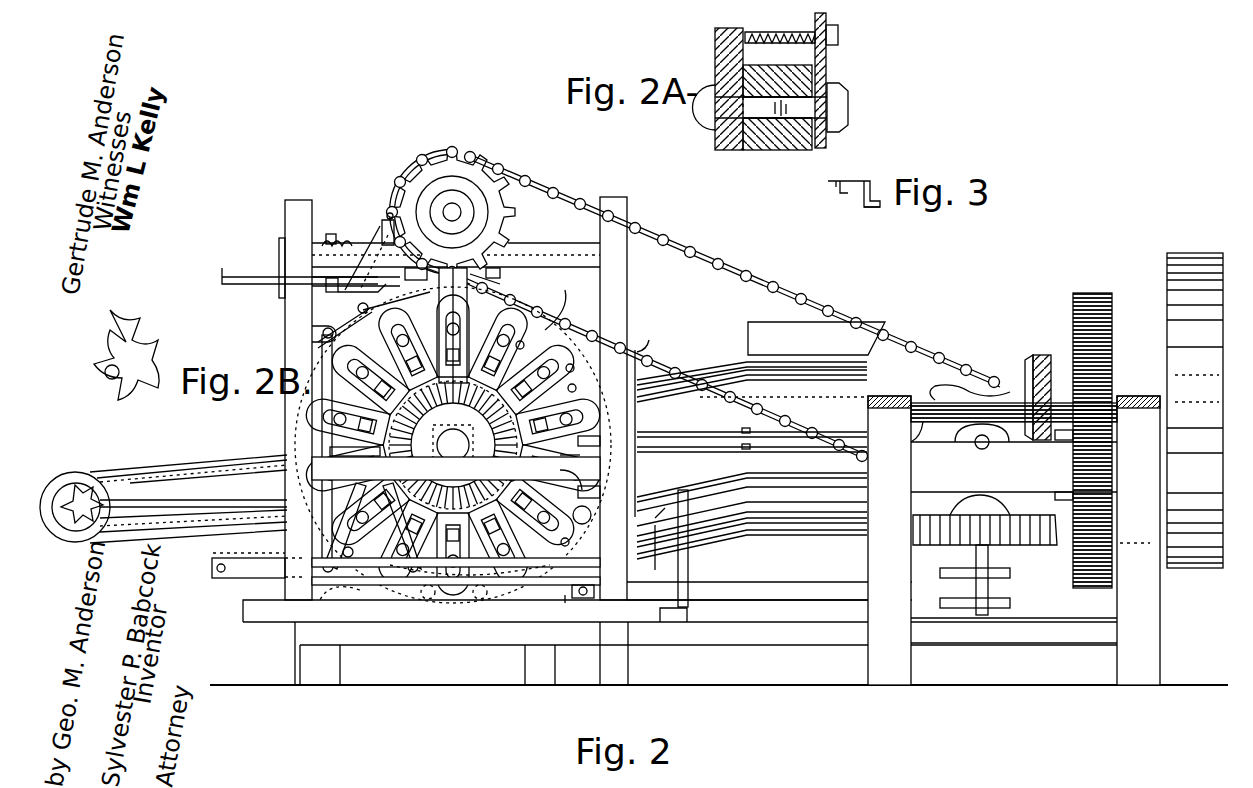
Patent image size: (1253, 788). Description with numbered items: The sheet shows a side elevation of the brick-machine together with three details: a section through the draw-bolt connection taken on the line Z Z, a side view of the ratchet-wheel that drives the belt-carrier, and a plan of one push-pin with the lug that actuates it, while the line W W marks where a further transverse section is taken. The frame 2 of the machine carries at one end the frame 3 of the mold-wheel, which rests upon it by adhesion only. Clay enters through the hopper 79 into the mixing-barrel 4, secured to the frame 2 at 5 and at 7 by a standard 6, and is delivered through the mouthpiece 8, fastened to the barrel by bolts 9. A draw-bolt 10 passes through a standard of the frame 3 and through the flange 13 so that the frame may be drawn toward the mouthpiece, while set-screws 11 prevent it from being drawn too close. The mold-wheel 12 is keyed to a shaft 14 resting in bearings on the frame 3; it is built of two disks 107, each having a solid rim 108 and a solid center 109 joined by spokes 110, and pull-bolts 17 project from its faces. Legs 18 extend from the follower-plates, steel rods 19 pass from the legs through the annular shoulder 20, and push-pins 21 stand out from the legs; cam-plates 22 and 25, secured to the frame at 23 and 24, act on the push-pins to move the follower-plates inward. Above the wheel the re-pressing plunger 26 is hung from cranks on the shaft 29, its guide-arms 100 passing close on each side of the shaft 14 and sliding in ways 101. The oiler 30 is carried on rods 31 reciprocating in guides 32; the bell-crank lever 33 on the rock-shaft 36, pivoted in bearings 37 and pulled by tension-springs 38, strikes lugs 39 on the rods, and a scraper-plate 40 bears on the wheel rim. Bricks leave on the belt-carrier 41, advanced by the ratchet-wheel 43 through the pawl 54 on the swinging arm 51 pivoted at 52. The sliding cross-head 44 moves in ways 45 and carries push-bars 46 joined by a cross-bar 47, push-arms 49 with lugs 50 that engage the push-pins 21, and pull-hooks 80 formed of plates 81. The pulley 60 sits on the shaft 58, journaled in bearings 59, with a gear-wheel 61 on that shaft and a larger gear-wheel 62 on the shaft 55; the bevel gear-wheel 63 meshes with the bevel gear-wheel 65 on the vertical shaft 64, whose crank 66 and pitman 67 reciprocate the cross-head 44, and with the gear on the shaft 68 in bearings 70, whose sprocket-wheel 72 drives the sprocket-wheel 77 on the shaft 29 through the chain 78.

In FIG. 2, the frame of the machine 2 is at (1010, 549).
In FIG. 2, the frame of the mold-wheel 3 is at (719, 441).
In FIG. 2A, the frame of the mold-wheel 3 is at (760, 150).
In FIG. 2, the mixing-barrel 4 is at (752, 460).
In FIG. 2, the securing point of mixing-barrel 5 is at (920, 443).
In FIG. 2, the standard 6 is at (688, 555).
In FIG. 2, the securing point of mixing-barrel 7 is at (687, 612).
In FIG. 2, the mouthpiece 8 is at (636, 428).
In FIG. 2A, the mouthpiece 8 is at (826, 65).
In FIG. 2, the bolts 9 is at (649, 437).
In FIG. 2, the draw-bolt 10 is at (571, 523).
In FIG. 2A, the draw-bolt 10 is at (848, 108).
In FIG. 2A, the set-screw 11 is at (838, 35).
In FIG. 2, the mold-wheel 12 is at (533, 307).
In FIG. 2, the flange 13 is at (574, 549).
In FIG. 2A, the flange 13 is at (715, 52).
In FIG. 2, the shaft 14 is at (453, 445).
In FIG. 2, the pull-bolts 17 is at (396, 312).
In FIG. 2, the legs 18 is at (453, 445).
In FIG. 3, the legs 18 is at (855, 177).
In FIG. 2, the steel rods 19 is at (453, 445).
In FIG. 2, the annular shoulder 20 is at (456, 468).
In FIG. 2, the push-pins 21 is at (463, 391).
In FIG. 3, the push-pins 21 is at (831, 197).
In FIG. 2, the cam-plate 22 is at (590, 498).
In FIG. 2, the securing point of cam-plate 23 is at (572, 478).
In FIG. 2, the securing point of cam-plate 24 is at (577, 460).
In FIG. 2, the cam-plate 25 is at (589, 438).
In FIG. 2, the plunger 26 is at (452, 265).
In FIG. 2, the shaft 29 is at (452, 212).
In FIG. 2, the oiler 30 is at (362, 293).
In FIG. 2, the rods 31 is at (291, 272).
In FIG. 2, the guides 32 is at (328, 292).
In FIG. 2, the bell-crank lever 33 is at (384, 222).
In FIG. 2, the rock-shaft 36 is at (382, 200).
In FIG. 2, the bearings 37 is at (366, 249).
In FIG. 2, the tension-springs 38 is at (340, 240).
In FIG. 2, the lugs 39 is at (294, 272).
In FIG. 2, the scraper-plate 40 is at (345, 328).
In FIG. 2, the belt-carrier 41 is at (163, 504).
In FIG. 2, the ratchet-wheel 43 is at (92, 505).
In FIG. 2B, the ratchet-wheel 43 is at (126, 355).
In FIG. 2, the sliding cross-head 44 is at (594, 591).
In FIG. 2, the ways 45 is at (657, 552).
In FIG. 2, the push-bar 46 is at (456, 568).
In FIG. 2, the cross-bar 47 is at (253, 577).
In FIG. 2, the push-arm 49 is at (372, 527).
In FIG. 3, the push-arm 49 is at (870, 218).
In FIG. 2, the lug 50 is at (355, 451).
In FIG. 3, the lug 50 is at (854, 193).
In FIG. 2, the swinging arm 51 is at (325, 447).
In FIG. 2, the pivot 52 is at (312, 338).
In FIG. 2, the pawl 54 is at (193, 495).
In FIG. 2, the shaft 55 is at (1057, 448).
In FIG. 2, the shaft 58 is at (920, 403).
In FIG. 2, the bearings 59 is at (1014, 540).
In FIG. 2, the pulley 60 is at (1208, 410).
In FIG. 2, the gear-wheel 61 is at (1074, 475).
In FIG. 2, the gear-wheel 62 is at (1104, 440).
In FIG. 2, the bevel gear-wheel 63 is at (1049, 355).
In FIG. 2, the vertically-extending shaft 64 is at (964, 580).
In FIG. 2, the bevel gear-wheel 65 is at (985, 533).
In FIG. 2, the crank 66 is at (975, 588).
In FIG. 2, the pitman 67 is at (769, 592).
In FIG. 2, the shaft 68 is at (982, 445).
In FIG. 2, the bearings 70 is at (972, 451).
In FIG. 2, the sprocket-wheel 72 is at (970, 395).
In FIG. 2, the sprocket-wheel 77 is at (452, 212).
In FIG. 2, the chain 78 is at (694, 304).
In FIG. 2, the hopper 79 is at (816, 338).
In FIG. 2, the pull-hooks 80 is at (456, 583).
In FIG. 2, the plates 81 is at (560, 607).
In FIG. 2, the guide-arms 100 is at (454, 325).
In FIG. 2, the ways 101 is at (476, 271).
In FIG. 2, the disks 107 is at (534, 334).
In FIG. 2, the solid rim 108 is at (367, 319).
In FIG. 2, the solid center 109 is at (528, 470).
In FIG. 2, the spokes 110 is at (543, 470).
In FIG. 2, the section line W W is at (1135, 544).
In FIG. 2, the section line Z Z is at (601, 525).